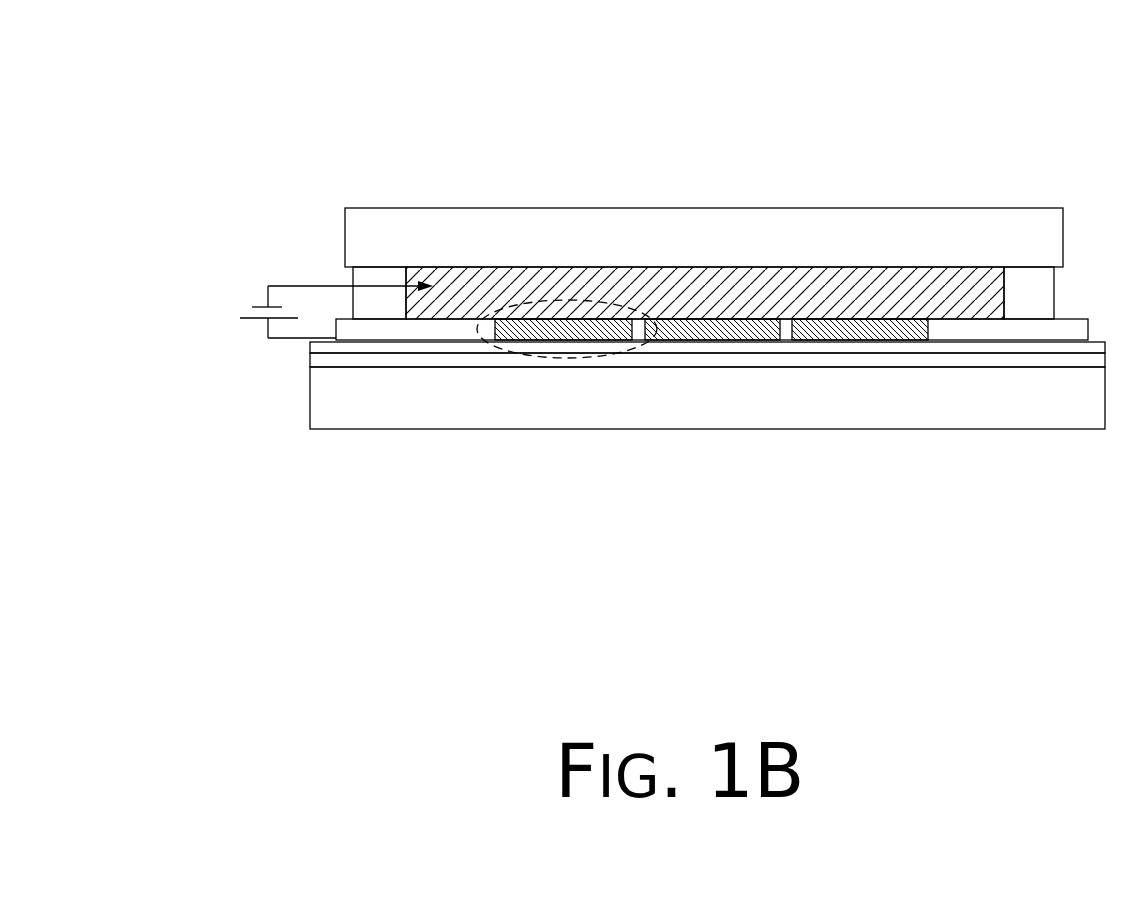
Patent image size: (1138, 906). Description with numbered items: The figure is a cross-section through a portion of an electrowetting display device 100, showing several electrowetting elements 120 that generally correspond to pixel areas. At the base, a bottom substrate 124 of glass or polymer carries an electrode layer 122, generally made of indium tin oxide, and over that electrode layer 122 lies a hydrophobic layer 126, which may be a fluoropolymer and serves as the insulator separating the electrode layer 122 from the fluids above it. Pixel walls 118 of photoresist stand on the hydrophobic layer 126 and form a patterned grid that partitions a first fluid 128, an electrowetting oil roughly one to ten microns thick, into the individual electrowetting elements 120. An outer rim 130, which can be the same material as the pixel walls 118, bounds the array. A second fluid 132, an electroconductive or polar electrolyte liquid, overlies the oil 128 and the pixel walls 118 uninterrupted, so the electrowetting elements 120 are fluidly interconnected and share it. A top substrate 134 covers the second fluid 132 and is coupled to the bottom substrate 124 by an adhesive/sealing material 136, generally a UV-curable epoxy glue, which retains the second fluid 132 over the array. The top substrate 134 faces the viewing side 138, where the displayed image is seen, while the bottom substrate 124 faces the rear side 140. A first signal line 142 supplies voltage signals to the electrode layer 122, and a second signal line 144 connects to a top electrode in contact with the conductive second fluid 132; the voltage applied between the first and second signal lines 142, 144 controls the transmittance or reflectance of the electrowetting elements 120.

The electrowetting display device 100 is at (900, 60).
The pixel walls 118 is at (787, 340).
The electrowetting elements 120 is at (567, 358).
The electrode layer 122 is at (308, 362).
The bottom substrate 124 is at (378, 414).
The hydrophobic layer 126 is at (305, 346).
The first fluid 128 is at (843, 340).
The outer rim 130 is at (1022, 342).
The second fluid 132 is at (772, 267).
The top substrate 134 is at (410, 247).
The adhesive/sealing material 136 is at (1054, 290).
The viewing side 138 is at (527, 158).
The rear side 140 is at (505, 463).
The first signal line 142 is at (268, 338).
The second signal line 144 is at (330, 286).